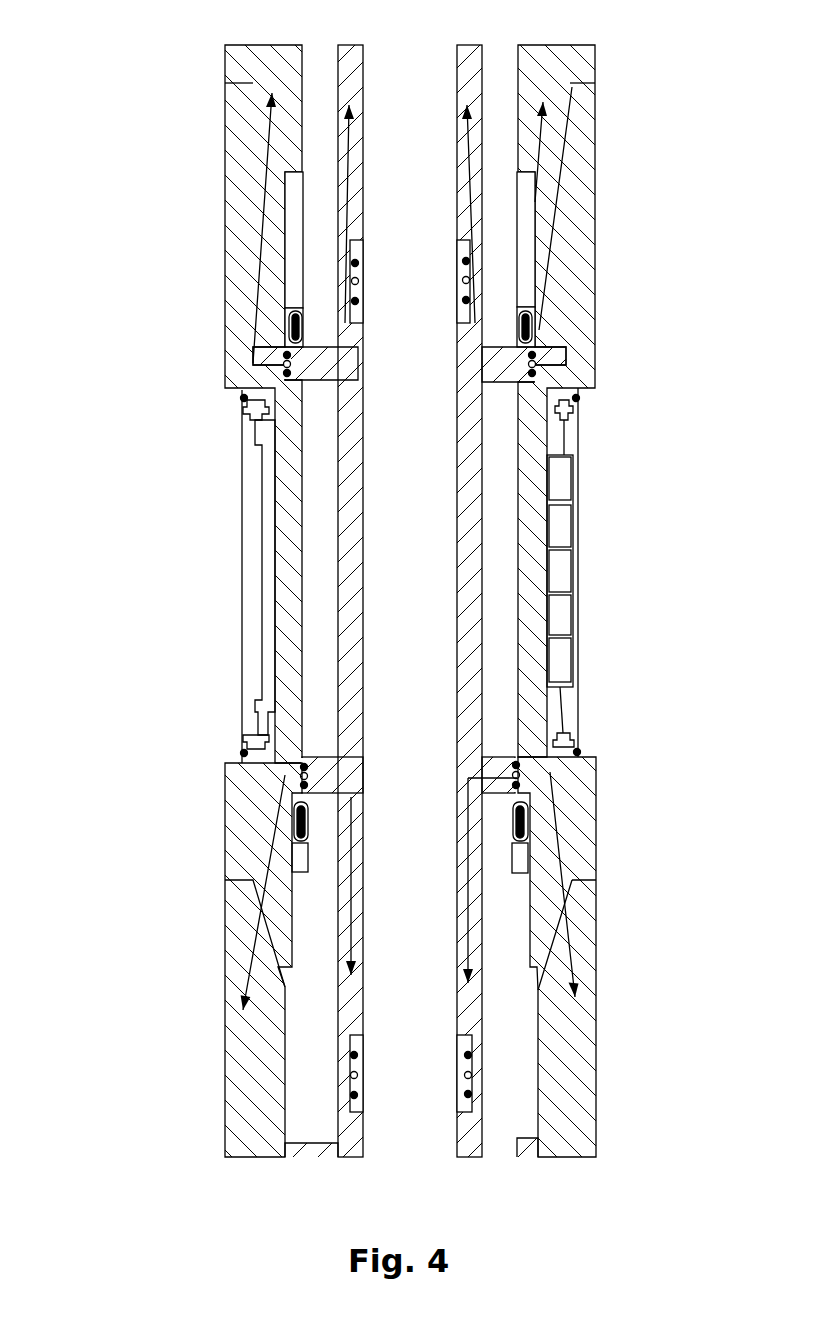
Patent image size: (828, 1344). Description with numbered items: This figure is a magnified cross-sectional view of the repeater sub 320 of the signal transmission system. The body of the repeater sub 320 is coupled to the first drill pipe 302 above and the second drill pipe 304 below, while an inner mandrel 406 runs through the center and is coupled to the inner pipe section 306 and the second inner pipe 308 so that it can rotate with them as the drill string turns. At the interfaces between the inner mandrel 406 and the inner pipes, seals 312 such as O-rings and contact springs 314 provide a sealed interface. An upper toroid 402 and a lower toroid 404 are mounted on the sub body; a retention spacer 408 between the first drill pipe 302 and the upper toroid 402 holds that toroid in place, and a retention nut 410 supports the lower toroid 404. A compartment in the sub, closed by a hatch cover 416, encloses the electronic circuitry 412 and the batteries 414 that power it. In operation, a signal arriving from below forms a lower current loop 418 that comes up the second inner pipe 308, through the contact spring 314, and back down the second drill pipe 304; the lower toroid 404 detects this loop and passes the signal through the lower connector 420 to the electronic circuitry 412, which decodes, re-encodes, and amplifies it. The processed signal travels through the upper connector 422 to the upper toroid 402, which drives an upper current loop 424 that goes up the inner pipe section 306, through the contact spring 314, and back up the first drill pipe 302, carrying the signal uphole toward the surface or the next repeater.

The first drill pipe 302 is at (255, 64).
The second drill pipe 304 is at (245, 1077).
The inner pipe section 306 is at (352, 70).
The second inner pipe 308 is at (355, 1140).
The seals 312 is at (284, 373).
The contact springs 314 is at (348, 280).
The repeater sub 320 is at (573, 108).
The upper toroid 402 is at (530, 318).
The lower toroid 404 is at (527, 822).
The inner mandrel 406 is at (467, 398).
The retention spacer 408 is at (293, 197).
The retention nut 410 is at (300, 857).
The electronic circuitry 412 is at (257, 655).
The batteries 414 is at (560, 655).
The hatch cover 416 is at (230, 432).
The lower current loop 418 is at (570, 940).
The lower connector 420 is at (300, 773).
The upper connector 422 is at (248, 400).
The upper current loop 424 is at (552, 180).